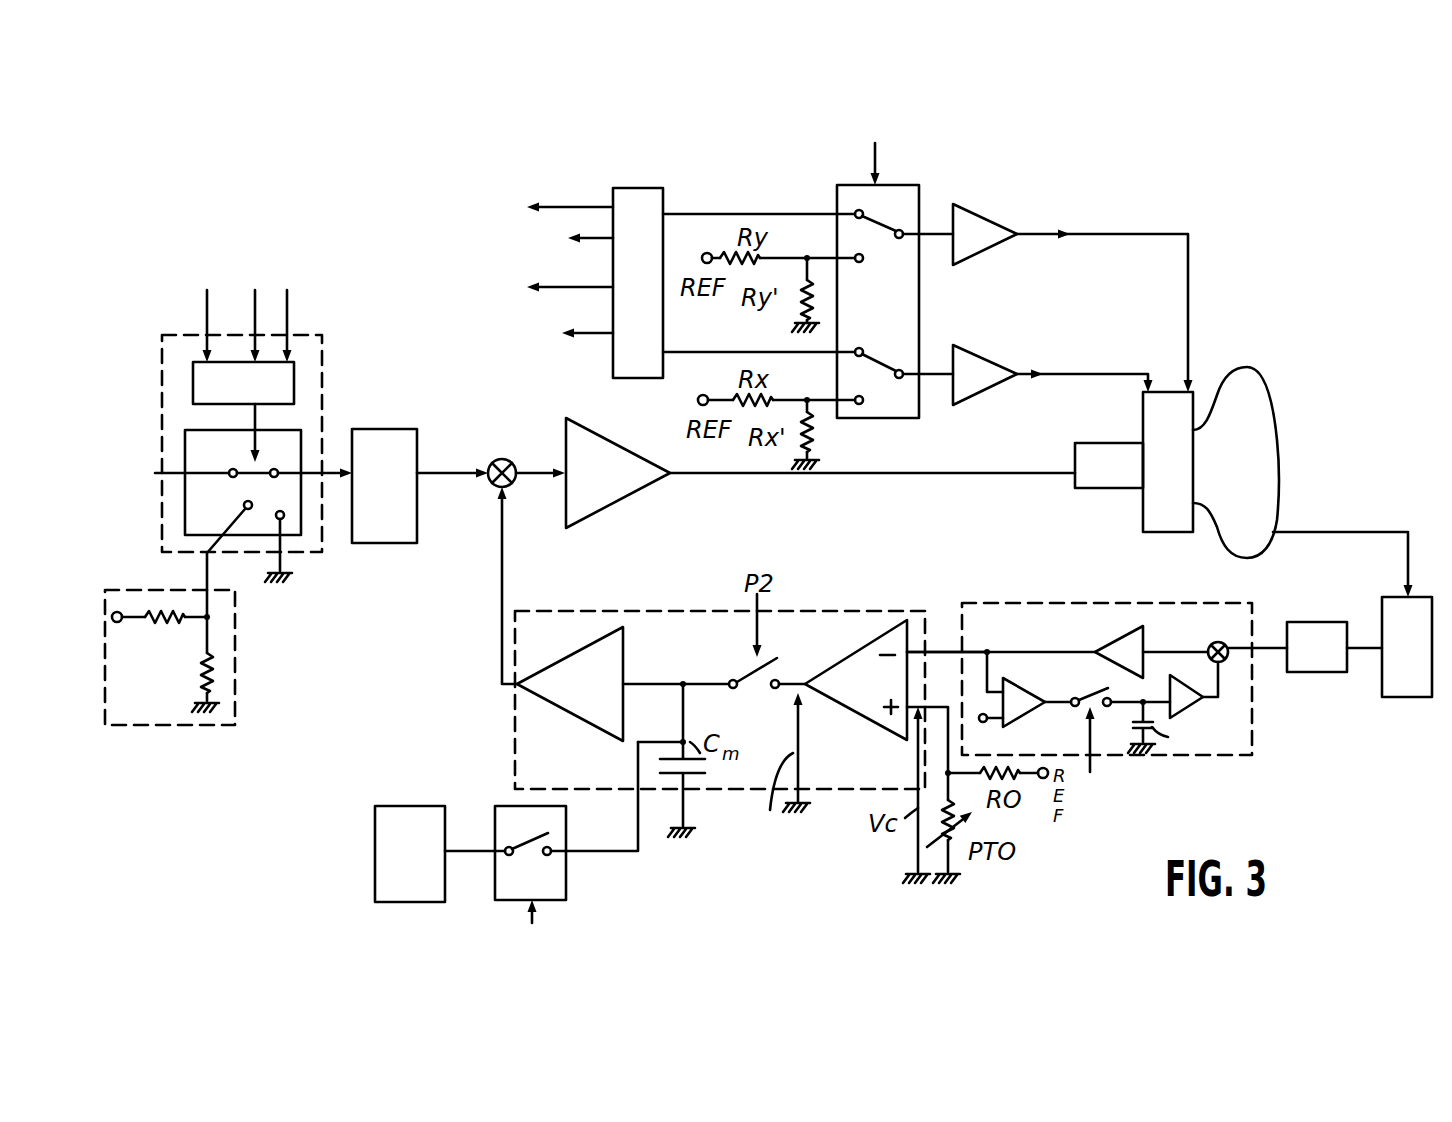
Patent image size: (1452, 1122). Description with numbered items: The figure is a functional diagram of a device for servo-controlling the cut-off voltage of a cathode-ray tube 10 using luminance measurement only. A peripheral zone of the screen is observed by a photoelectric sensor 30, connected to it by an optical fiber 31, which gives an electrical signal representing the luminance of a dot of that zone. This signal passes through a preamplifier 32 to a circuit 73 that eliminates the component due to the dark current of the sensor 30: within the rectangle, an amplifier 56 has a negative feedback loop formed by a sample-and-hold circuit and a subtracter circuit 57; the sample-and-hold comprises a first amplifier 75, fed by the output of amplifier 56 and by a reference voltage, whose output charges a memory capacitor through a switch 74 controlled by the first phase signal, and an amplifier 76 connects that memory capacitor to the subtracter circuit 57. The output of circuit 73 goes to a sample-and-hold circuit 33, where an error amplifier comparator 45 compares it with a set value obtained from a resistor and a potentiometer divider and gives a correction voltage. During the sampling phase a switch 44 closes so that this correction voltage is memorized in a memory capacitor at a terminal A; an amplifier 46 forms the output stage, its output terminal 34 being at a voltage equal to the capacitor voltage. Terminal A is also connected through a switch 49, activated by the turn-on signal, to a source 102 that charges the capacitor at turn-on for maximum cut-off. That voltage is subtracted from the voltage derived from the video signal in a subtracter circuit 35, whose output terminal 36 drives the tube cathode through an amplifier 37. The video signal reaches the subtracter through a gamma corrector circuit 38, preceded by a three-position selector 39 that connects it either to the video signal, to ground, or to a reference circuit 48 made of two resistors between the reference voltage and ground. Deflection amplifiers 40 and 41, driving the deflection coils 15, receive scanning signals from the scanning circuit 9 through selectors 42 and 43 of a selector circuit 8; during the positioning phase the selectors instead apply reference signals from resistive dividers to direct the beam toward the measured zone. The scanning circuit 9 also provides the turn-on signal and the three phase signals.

The selector circuit 8 is at (889, 418).
The scanning circuit 9 is at (636, 188).
The cathode-ray tube 10 is at (1288, 407).
The deflection coils 15 is at (1160, 419).
The photoelectric sensor 30 is at (1400, 697).
The optical fiber 31 is at (1408, 546).
The preamplifier 32 is at (1313, 672).
The sample-and-hold circuit 33 is at (836, 605).
The output terminal 34 is at (505, 689).
The subtracter circuit 35 is at (500, 459).
The output terminal 36 is at (533, 478).
The amplifier 37 is at (627, 493).
The gamma corrector circuit 38 is at (382, 437).
The three-position selector 39 is at (322, 345).
The deflection amplifier 40 is at (988, 223).
The deflection amplifier 41 is at (990, 362).
The selector 42 is at (884, 210).
The selector 43 is at (884, 353).
The switch 44 is at (748, 665).
The error amplifier comparator 45 is at (853, 712).
The amplifier 46 is at (585, 658).
The reference circuit 48 is at (235, 673).
The switch 49 is at (566, 870).
The amplifier 56 is at (1108, 647).
The subtracter circuit 57 is at (1219, 642).
The dark current elimination circuit 73 is at (1036, 603).
The switch 74 is at (1080, 704).
The first amplifier 75 is at (1025, 697).
The amplifier 76 is at (1197, 705).
The source 102 is at (382, 882).